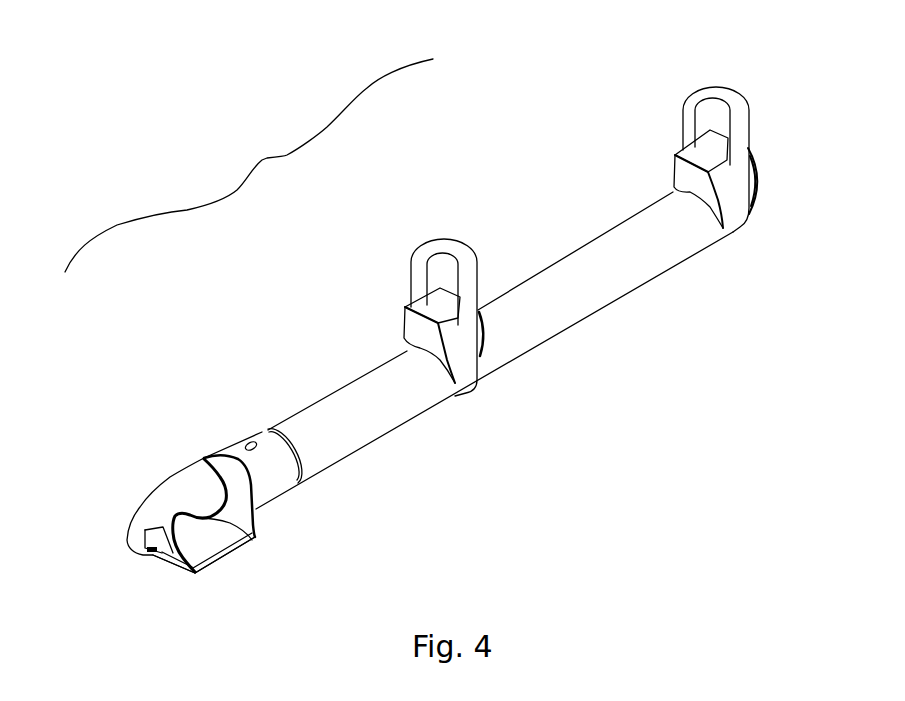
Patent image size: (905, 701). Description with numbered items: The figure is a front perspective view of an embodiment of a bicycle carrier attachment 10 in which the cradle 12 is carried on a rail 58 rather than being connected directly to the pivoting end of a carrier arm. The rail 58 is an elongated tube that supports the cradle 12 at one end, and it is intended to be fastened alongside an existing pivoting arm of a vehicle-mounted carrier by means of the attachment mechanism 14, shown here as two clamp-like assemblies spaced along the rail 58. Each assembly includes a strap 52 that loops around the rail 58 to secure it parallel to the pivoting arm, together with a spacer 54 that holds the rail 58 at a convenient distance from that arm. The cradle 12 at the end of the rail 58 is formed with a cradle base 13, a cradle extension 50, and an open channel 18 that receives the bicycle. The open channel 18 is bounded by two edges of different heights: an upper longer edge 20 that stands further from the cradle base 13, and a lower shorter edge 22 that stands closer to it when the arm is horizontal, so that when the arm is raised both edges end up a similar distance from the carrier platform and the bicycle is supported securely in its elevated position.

The bicycle carrier attachment 10 is at (249, 165).
The cradle 12 is at (238, 503).
The cradle base 13 is at (197, 545).
The mechanism for attaching cradle to carrier 14 is at (415, 328).
The open channel 18 is at (257, 536).
The upper longer edge of open channel 20 is at (215, 455).
The lower shorter edge of open channel 22 is at (176, 513).
The cradle extension 50 is at (170, 562).
The strap to hold rail to pivoting arm of carrier 52 is at (720, 100).
The spacer between rail and pivoting arm 54 is at (705, 186).
The rail to support cradle 58 is at (506, 328).